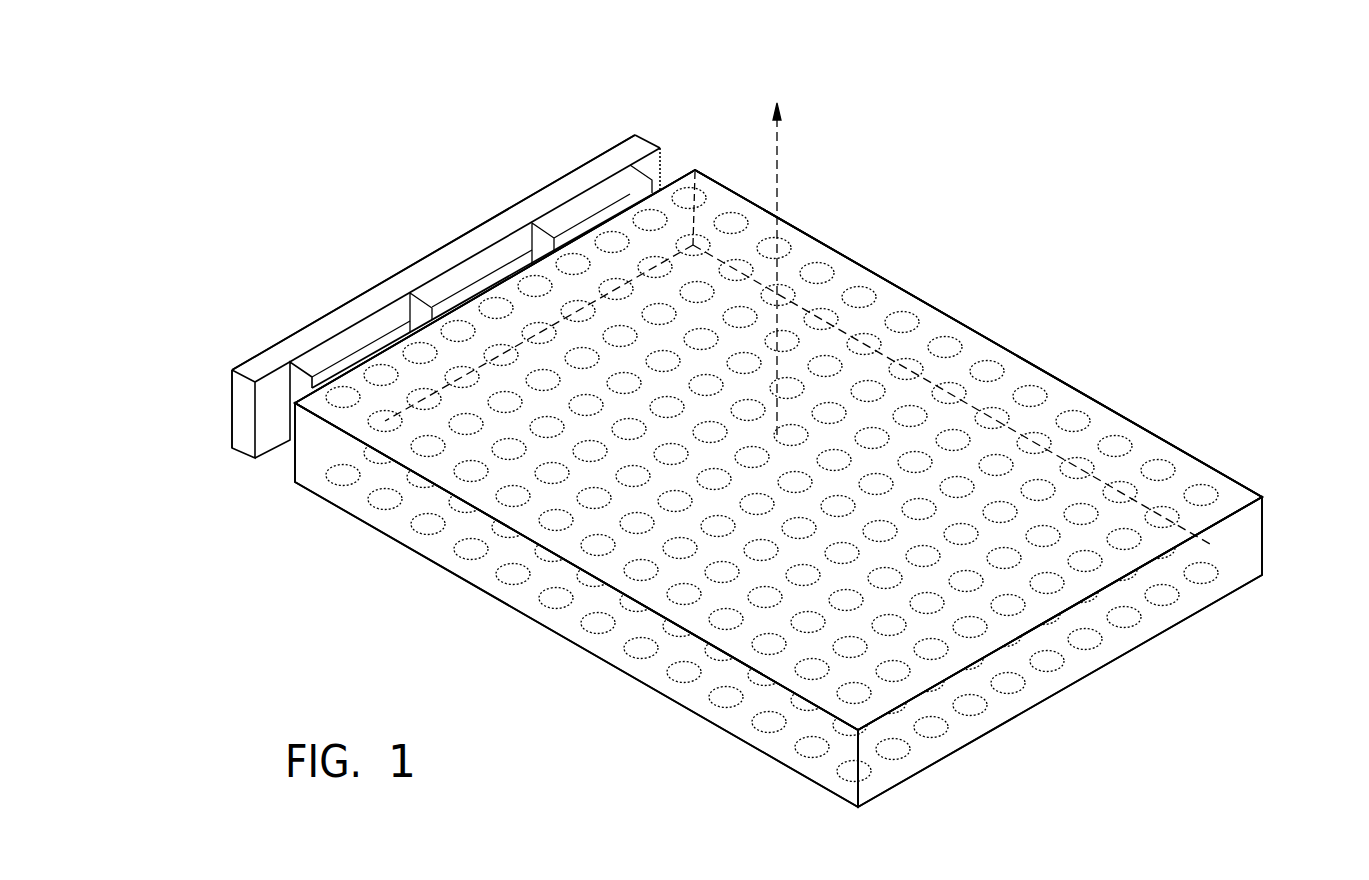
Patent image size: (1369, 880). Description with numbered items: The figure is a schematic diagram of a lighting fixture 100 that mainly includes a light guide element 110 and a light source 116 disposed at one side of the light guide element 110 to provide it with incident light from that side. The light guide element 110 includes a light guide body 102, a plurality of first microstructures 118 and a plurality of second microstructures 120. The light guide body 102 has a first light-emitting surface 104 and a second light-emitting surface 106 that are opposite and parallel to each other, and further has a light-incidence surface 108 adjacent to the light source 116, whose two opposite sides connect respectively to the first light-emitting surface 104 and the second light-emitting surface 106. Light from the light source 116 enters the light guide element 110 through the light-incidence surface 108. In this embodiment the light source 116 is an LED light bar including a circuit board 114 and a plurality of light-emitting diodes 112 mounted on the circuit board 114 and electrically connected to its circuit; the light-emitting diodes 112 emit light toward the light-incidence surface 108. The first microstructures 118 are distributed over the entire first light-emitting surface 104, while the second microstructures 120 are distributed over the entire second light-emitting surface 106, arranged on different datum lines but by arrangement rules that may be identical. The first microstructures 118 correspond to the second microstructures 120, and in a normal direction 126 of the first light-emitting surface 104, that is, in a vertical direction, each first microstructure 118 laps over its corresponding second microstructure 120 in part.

The lighting fixture 100 is at (396, 190).
The light guide body 102 is at (1248, 537).
The first light-emitting surface 104 is at (1148, 447).
The second light-emitting surface 106 is at (882, 763).
The light-incidence surface 108 is at (316, 428).
The light guide element 110 is at (1232, 440).
The light-emitting diodes 112 is at (268, 378).
The circuit board 114 is at (242, 421).
The light source 116 is at (120, 343).
The first microstructures 118 is at (1030, 385).
The second microstructures 120 is at (1053, 708).
The normal direction 126 is at (780, 172).